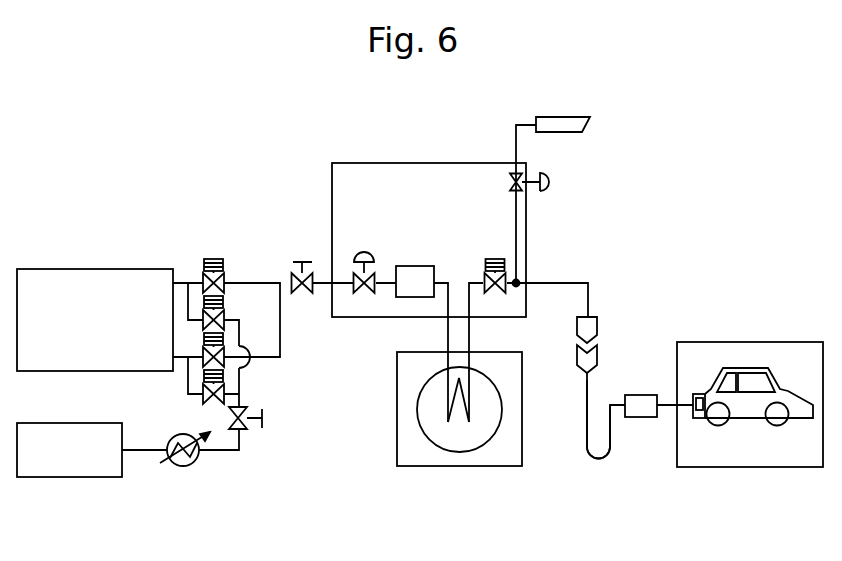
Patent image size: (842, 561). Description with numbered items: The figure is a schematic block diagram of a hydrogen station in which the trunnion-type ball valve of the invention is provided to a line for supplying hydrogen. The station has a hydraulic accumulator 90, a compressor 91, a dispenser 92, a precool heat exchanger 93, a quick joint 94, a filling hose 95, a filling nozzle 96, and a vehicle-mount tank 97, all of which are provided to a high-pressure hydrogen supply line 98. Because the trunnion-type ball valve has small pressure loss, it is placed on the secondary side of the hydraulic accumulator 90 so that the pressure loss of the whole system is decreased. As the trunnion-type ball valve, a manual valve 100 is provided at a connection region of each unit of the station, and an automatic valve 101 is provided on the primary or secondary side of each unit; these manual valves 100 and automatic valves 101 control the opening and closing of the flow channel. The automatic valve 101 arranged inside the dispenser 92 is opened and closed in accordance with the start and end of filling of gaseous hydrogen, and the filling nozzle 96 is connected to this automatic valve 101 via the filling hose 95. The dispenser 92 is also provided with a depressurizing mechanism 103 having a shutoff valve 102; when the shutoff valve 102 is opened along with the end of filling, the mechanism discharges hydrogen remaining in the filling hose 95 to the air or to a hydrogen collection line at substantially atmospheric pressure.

The hydraulic accumulator 90 is at (82, 280).
The compressor 91 is at (76, 468).
The dispenser 92 is at (392, 162).
The precool heat exchanger 93 is at (456, 462).
The quick joint 94 is at (612, 336).
The filling hose 95 is at (597, 460).
The filling nozzle 96 is at (638, 400).
The vehicle-mount tank 97 is at (698, 418).
The high-pressure hydrogen supply line 98 is at (560, 264).
The manual valve 100 is at (295, 260).
The automatic valve 101 is at (225, 313).
The shutoff valve 102 is at (551, 181).
The depressurizing mechanism 103 is at (587, 181).